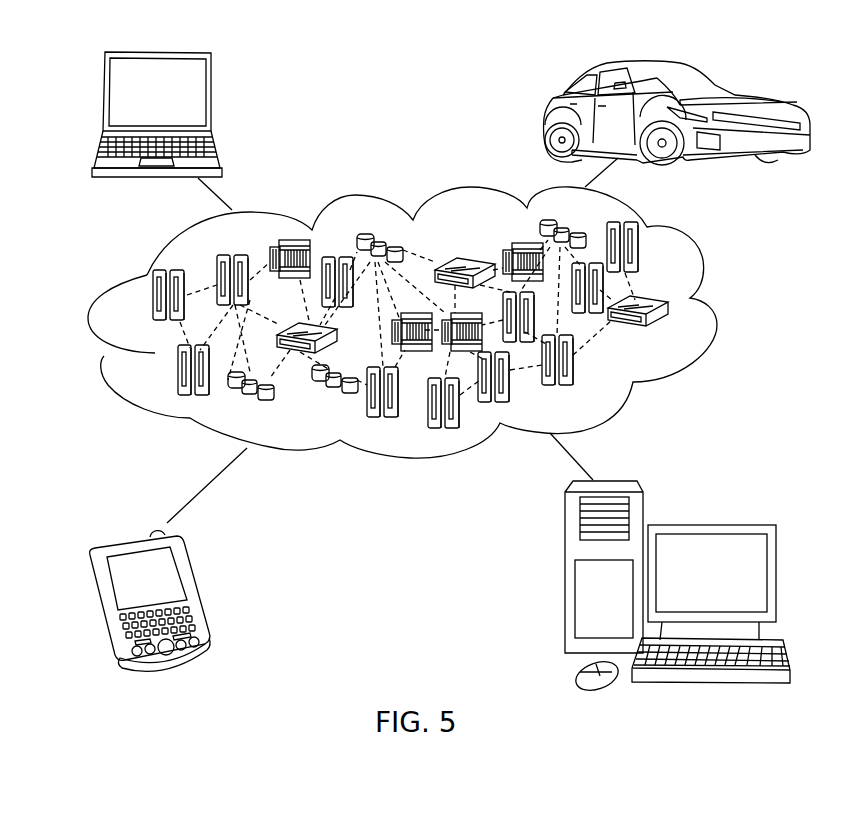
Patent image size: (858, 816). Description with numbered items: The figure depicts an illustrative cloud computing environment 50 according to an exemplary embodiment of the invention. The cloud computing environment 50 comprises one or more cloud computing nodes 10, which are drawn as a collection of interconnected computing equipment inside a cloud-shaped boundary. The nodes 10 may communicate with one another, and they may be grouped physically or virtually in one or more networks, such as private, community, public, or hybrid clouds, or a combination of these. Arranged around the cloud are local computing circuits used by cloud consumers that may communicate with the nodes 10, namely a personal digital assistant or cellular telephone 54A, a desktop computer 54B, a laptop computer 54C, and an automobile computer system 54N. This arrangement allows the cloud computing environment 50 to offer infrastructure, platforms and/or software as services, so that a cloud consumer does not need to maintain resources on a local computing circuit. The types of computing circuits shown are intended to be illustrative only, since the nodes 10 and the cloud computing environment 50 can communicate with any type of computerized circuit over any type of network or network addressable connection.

The cloud computing node 10 is at (675, 339).
The cloud computing environment 50 is at (712, 312).
The personal digital assistant (PDA) or cellular telephone 54A is at (197, 590).
The desktop computer 54B is at (708, 525).
The laptop computer 54C is at (210, 100).
The automobile computer system 54N is at (547, 115).